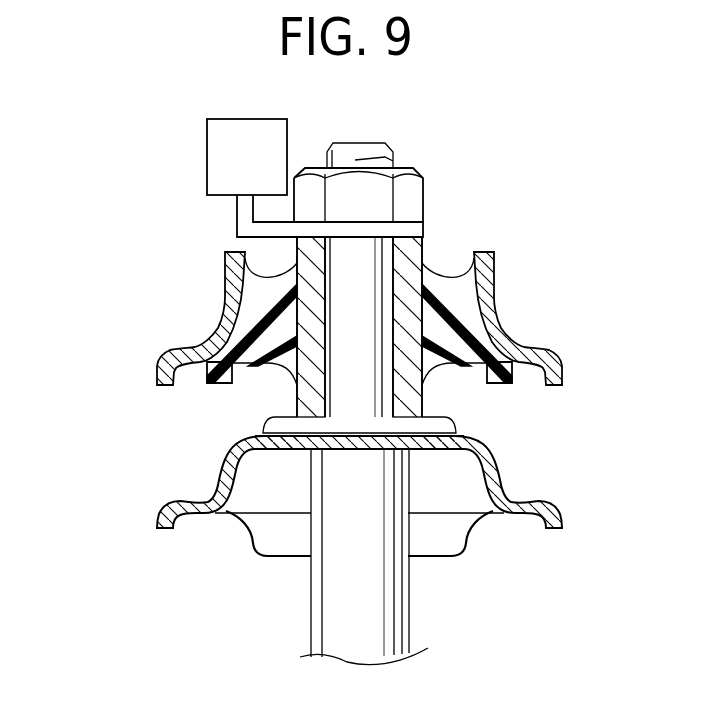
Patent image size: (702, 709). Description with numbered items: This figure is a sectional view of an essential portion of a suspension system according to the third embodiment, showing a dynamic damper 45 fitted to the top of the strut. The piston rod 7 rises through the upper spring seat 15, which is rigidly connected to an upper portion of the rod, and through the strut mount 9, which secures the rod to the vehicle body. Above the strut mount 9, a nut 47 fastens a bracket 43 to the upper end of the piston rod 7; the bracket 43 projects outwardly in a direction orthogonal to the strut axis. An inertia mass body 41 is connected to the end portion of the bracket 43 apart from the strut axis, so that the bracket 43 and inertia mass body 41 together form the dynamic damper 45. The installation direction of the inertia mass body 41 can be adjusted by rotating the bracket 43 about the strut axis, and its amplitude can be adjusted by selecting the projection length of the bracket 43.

The piston rod 7 is at (395, 620).
The strut mount 9 is at (465, 288).
The upper spring seat 15 is at (545, 498).
The inertia mass body 41 is at (225, 148).
The bracket 43 is at (240, 232).
The dynamic damper 45 is at (167, 189).
The nut 47 is at (413, 190).